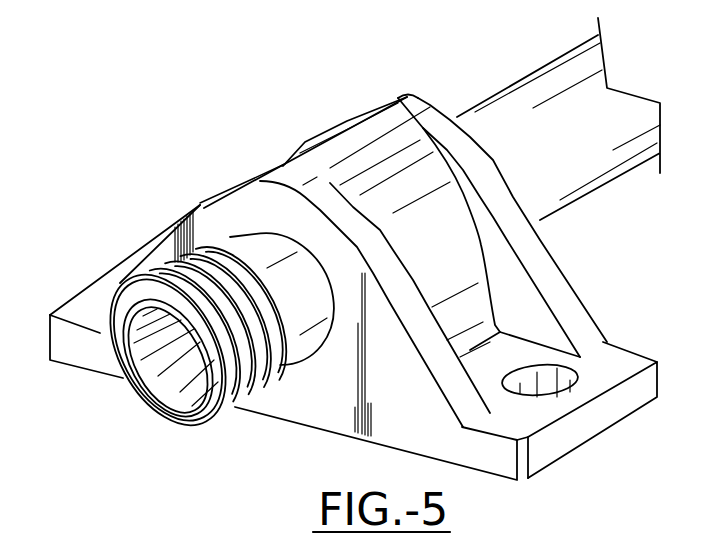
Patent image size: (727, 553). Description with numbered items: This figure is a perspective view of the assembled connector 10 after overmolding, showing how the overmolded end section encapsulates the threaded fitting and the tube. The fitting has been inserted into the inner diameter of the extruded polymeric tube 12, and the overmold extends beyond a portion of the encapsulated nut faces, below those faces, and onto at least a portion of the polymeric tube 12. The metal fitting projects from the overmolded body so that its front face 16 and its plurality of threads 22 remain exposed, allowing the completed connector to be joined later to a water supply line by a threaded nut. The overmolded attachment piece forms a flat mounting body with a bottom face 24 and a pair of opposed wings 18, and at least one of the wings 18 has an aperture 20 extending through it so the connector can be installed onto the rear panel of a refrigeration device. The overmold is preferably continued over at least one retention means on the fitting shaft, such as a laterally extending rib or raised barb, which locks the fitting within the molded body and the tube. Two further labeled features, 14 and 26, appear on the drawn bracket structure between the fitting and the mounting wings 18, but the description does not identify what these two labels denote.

The assembled connector 10 is at (228, 174).
The extruded polymeric tube 12 is at (617, 168).
The support rib 14 is at (553, 253).
The front face 16 is at (161, 412).
The opposed wings 18 is at (123, 283).
The aperture 20 is at (578, 382).
The threads 22 is at (274, 383).
The bottom face 24 is at (416, 395).
The rib web surface 26 is at (563, 266).